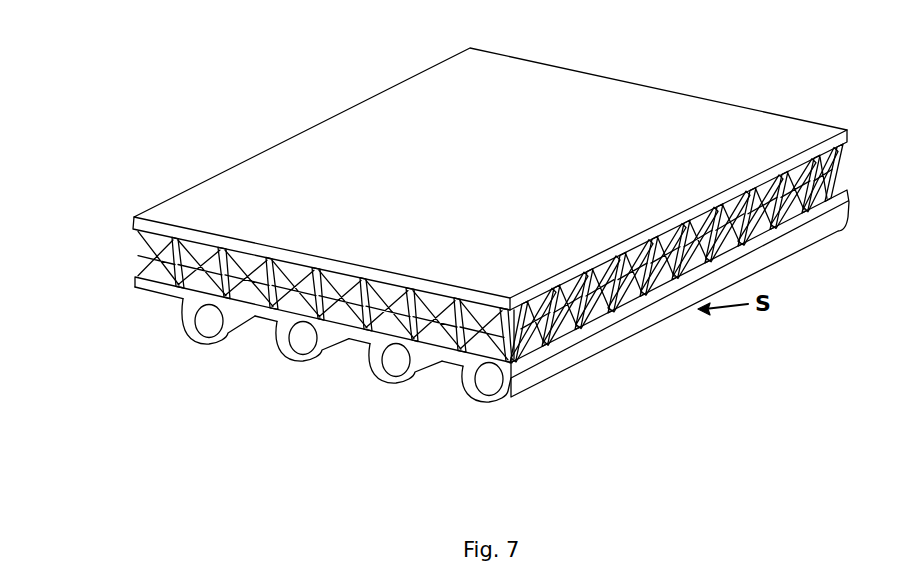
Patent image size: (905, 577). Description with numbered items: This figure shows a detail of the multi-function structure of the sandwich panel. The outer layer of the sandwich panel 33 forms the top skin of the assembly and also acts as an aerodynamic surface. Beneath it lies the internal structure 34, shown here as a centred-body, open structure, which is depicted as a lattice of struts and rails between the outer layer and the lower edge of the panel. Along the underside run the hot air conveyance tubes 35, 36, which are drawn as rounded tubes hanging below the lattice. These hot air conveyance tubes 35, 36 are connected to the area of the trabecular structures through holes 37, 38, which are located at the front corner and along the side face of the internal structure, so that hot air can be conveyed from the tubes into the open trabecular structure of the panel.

The outer layer of the sandwich panel 33 is at (652, 130).
The internal structure 34 is at (153, 258).
The hot air conveyance tube 35 is at (208, 316).
The hot air conveyance tube 36 is at (287, 325).
The hole 37 is at (517, 338).
The hole 38 is at (600, 310).